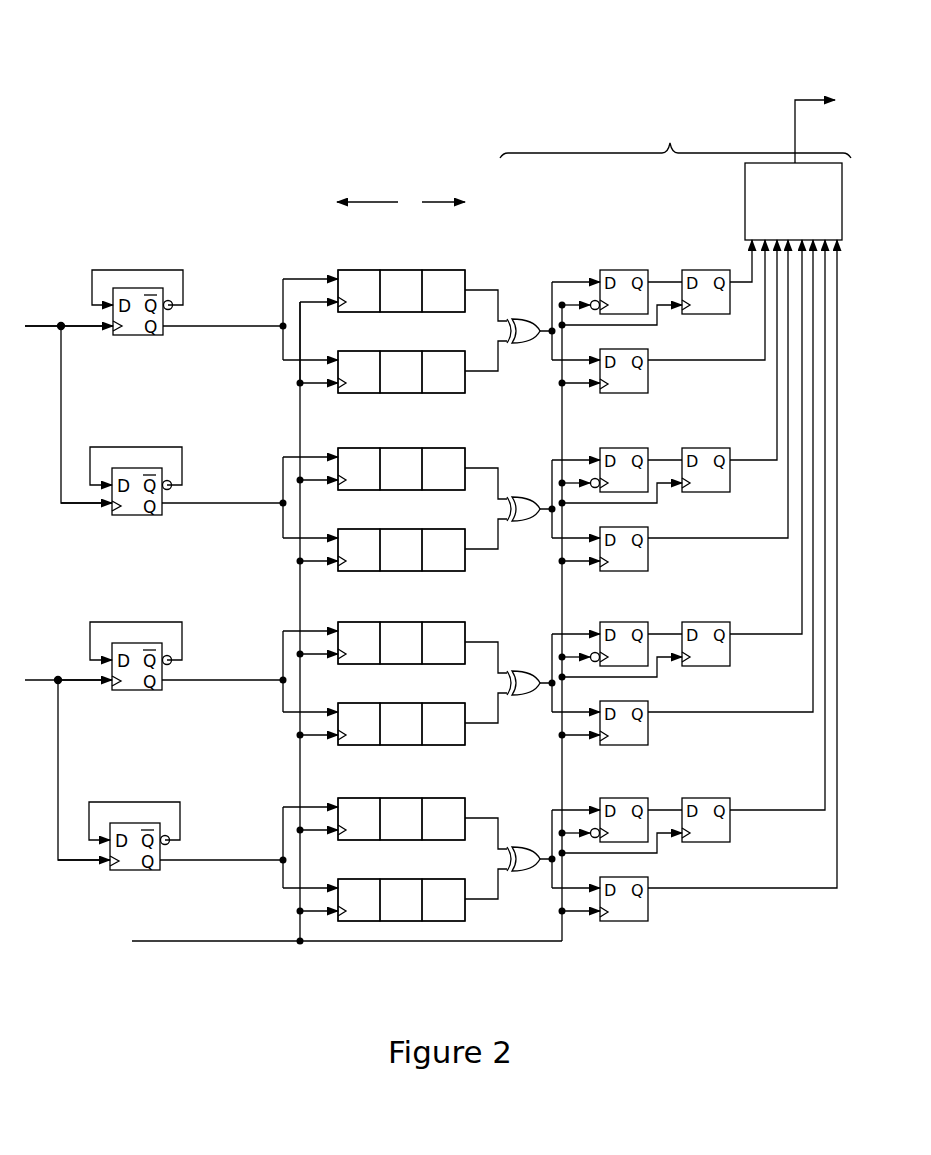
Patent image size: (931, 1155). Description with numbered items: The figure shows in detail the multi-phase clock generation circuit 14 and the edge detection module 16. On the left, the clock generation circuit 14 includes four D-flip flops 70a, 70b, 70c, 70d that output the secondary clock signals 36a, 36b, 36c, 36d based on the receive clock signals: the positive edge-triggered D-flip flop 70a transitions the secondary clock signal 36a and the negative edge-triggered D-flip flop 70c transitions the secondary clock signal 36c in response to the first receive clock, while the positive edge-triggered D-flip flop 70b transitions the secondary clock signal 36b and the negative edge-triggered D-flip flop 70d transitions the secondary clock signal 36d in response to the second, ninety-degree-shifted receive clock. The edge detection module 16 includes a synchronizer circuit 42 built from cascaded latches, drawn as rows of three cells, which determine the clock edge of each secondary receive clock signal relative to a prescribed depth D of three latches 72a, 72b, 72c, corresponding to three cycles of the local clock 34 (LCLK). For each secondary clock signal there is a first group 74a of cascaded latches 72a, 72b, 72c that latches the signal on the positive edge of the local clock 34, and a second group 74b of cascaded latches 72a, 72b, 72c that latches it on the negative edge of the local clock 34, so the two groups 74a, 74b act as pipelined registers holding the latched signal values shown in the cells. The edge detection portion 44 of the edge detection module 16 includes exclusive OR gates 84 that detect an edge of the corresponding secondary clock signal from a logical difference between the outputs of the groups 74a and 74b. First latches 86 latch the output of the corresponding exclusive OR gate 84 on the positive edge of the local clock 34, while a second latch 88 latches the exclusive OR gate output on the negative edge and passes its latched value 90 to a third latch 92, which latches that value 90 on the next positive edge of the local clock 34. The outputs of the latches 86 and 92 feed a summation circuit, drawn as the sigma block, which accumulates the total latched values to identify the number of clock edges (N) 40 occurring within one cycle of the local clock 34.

The multi-phase clock generation circuit 14 is at (194, 208).
The edge detection module 16 is at (449, 117).
The local clock 34 is at (155, 943).
The secondary clock signal 36a is at (268, 328).
The secondary clock signal 36b is at (200, 681).
The secondary clock signal 36c is at (207, 504).
The secondary clock signal 36d is at (200, 861).
The number of clock edges (N) 40 is at (800, 68).
The synchronizer circuit 42 is at (371, 194).
The edge detection portion 44 is at (668, 138).
The D-flip flop 70a is at (133, 335).
The D-flip flop 70b is at (133, 690).
The D-flip flop 70c is at (133, 513).
The D-flip flop 70d is at (128, 870).
The latch 72a is at (447, 270).
The latch 72b is at (405, 270).
The latch 72c is at (360, 270).
The first group of cascaded latches 74a is at (354, 318).
The second group of cascaded latches 74b is at (440, 348).
The exclusive OR gate 84 is at (522, 318).
The first latch 86 is at (648, 382).
The second latch 88 is at (622, 270).
The latched value 90 is at (658, 278).
The third latch 92 is at (702, 270).